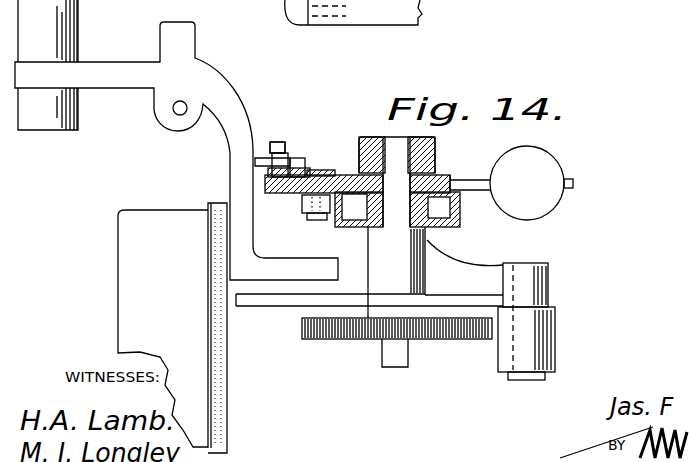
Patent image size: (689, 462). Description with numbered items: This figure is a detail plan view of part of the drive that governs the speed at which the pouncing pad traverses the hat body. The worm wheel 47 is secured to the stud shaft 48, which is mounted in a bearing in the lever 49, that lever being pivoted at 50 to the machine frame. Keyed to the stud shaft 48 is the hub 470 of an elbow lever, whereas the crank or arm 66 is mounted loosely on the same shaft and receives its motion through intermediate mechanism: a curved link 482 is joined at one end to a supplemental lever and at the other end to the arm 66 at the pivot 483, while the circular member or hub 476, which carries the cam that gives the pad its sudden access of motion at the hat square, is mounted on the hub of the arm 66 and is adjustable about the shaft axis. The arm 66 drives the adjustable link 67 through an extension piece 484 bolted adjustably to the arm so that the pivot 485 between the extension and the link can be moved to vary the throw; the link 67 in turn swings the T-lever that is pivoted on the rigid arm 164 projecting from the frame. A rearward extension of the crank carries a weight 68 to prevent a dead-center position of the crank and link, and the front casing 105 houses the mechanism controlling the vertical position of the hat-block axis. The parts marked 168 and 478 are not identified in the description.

The support block 168 is at (63, 40).
The rigid arm 164 is at (232, 106).
The front casing 105 is at (172, 328).
The pivotal point 485 is at (283, 138).
The extension piece 484 is at (332, 168).
The link 67 is at (260, 161).
The crank 66 is at (265, 191).
The hub 470 is at (366, 137).
The stud shaft 48 is at (400, 155).
The circular member or hub 476 is at (350, 227).
The bearing block 478 is at (427, 210).
The curved link 482 is at (303, 205).
The pivot 483 is at (310, 220).
The weight 68 is at (545, 168).
The lever 49 is at (273, 300).
The worm wheel 47 is at (397, 346).
The pivot 50 is at (535, 258).